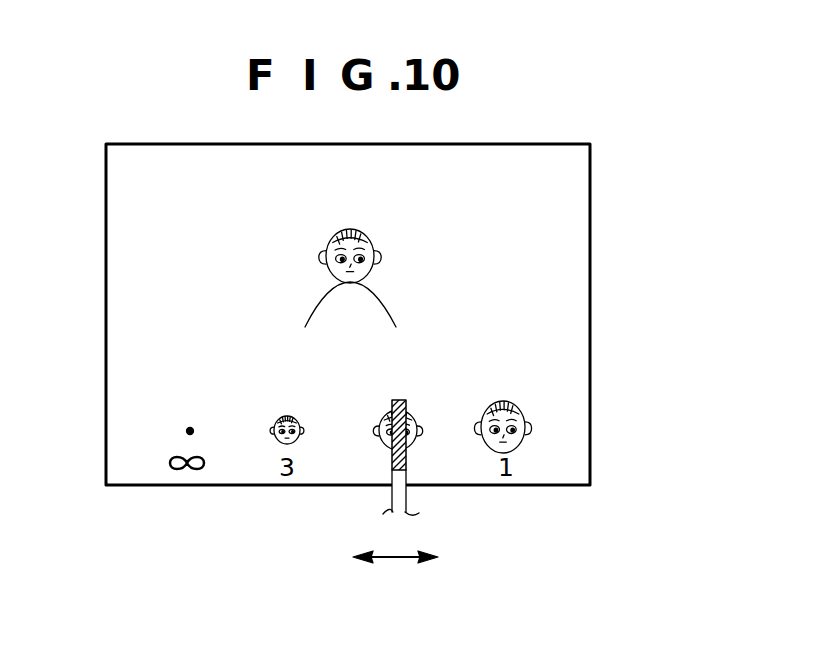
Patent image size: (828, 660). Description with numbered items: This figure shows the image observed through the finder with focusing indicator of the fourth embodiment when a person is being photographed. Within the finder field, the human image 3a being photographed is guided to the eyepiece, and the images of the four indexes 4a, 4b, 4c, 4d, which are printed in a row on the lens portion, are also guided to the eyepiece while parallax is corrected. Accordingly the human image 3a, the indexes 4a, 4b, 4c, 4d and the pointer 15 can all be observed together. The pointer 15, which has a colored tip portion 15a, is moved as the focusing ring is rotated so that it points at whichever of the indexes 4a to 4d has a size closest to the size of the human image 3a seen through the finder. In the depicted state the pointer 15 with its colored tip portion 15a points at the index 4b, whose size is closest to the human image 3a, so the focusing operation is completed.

The human image 3a is at (591, 221).
The index 4d is at (190, 420).
The index 4c is at (301, 417).
The index 4b is at (419, 420).
The index 4a is at (533, 411).
The pointer 15 is at (370, 430).
The colored tip portion 15a is at (400, 398).